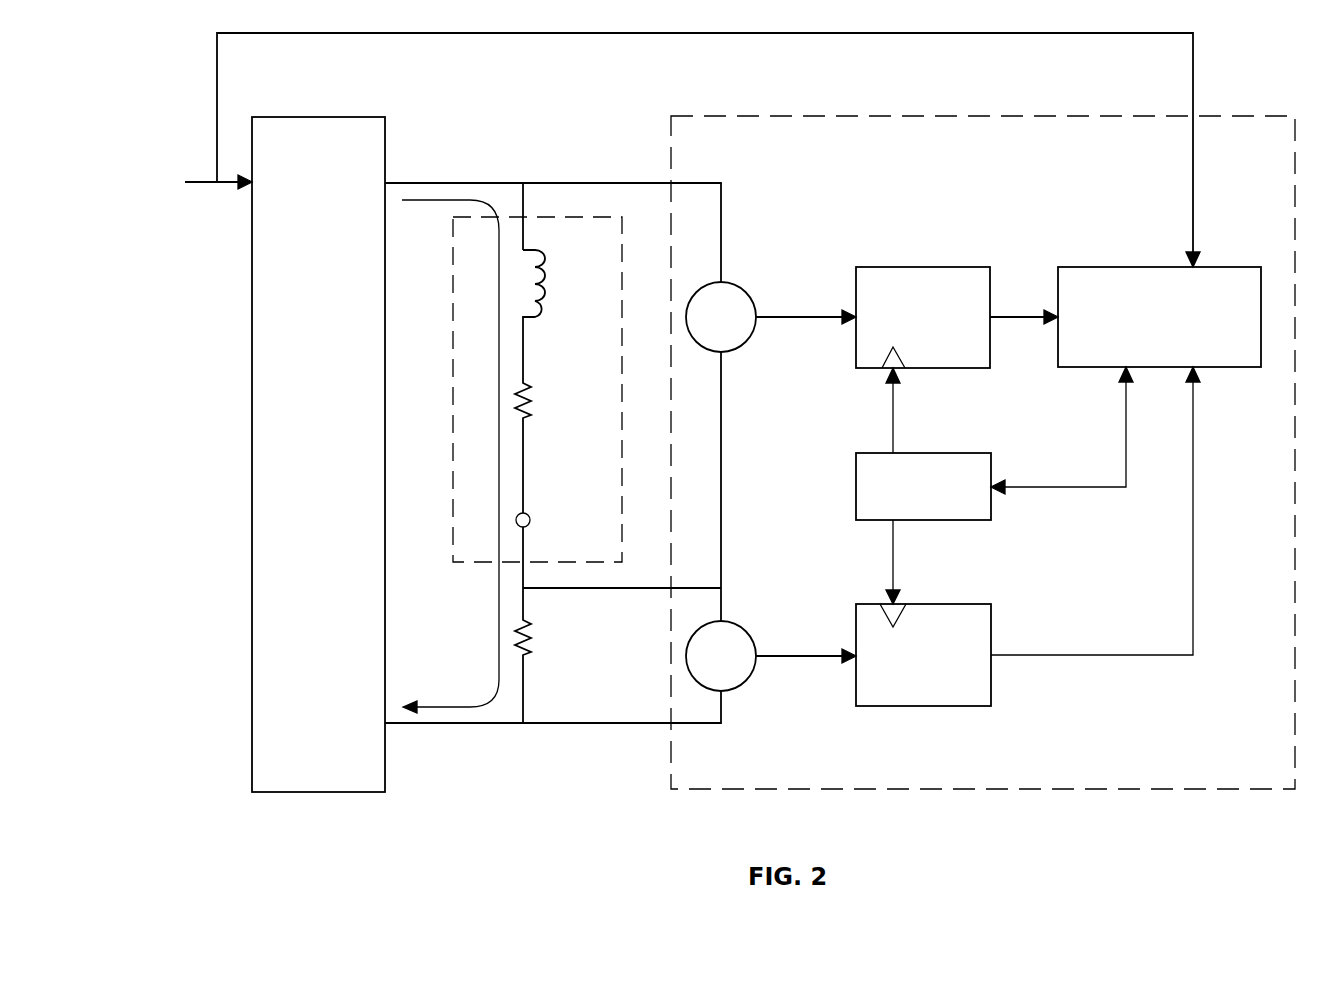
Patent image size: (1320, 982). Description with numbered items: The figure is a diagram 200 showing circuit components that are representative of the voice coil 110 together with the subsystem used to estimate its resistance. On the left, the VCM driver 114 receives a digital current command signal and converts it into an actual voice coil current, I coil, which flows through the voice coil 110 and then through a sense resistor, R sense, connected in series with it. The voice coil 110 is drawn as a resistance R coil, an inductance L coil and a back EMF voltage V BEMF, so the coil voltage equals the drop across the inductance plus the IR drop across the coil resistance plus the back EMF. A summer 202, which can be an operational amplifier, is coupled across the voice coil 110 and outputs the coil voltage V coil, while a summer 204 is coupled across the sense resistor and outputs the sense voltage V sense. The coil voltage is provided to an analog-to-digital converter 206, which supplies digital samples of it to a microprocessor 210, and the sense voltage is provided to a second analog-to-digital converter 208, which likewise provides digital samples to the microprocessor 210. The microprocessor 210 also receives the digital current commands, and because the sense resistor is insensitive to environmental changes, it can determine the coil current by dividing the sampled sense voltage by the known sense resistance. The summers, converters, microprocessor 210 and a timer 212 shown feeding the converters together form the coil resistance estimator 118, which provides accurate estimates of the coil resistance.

The voice coil 110 is at (605, 215).
The VCM driver 114 is at (318, 800).
The coil resistance estimator 118 is at (1203, 790).
The diagram 200 is at (577, 854).
The summer 202 is at (742, 282).
The summer 204 is at (746, 617).
The analog-to-digital converter 206 is at (924, 262).
The analog-to-digital converter 208 is at (966, 598).
The microprocessor 210 is at (1218, 262).
The timer 212 is at (948, 445).